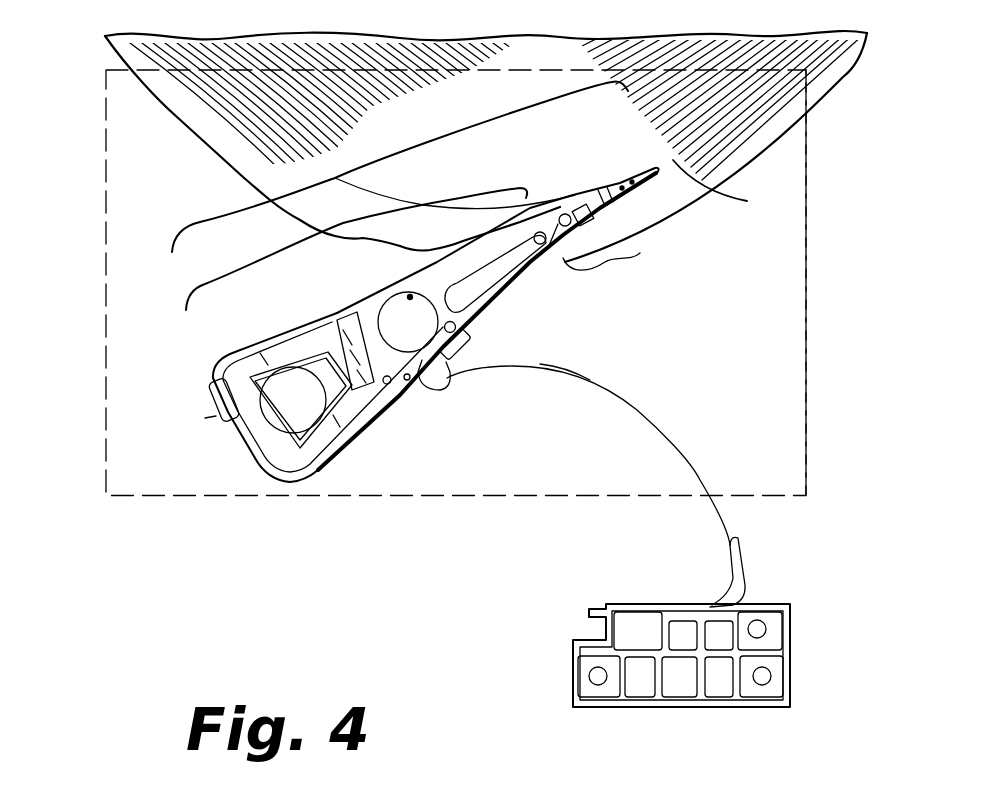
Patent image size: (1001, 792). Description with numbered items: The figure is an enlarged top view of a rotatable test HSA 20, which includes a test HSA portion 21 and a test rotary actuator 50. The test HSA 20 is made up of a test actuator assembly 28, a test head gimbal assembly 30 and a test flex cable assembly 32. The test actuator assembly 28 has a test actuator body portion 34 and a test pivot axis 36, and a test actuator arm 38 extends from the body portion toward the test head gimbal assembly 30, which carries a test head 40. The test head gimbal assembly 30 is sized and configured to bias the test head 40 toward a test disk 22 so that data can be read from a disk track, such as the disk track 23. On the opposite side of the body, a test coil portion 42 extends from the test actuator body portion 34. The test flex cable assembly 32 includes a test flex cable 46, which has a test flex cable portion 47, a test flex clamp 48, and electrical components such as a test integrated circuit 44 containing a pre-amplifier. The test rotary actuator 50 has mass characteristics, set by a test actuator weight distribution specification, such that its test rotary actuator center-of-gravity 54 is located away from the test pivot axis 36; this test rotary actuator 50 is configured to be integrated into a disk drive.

The test HSA 20 is at (86, 157).
The test HSA portion 21 is at (806, 395).
The test disk 22 is at (843, 77).
The disk track 23 is at (745, 201).
The test actuator assembly 28 is at (372, 222).
The test head gimbal assembly 30 is at (622, 268).
The test flex cable assembly 32 is at (655, 444).
The test actuator body portion 34 is at (393, 288).
The test pivot axis 36 is at (410, 328).
The test actuator arm 38 is at (493, 243).
The test head 40 is at (654, 168).
The test coil portion 42 is at (248, 343).
The test integrated circuit 44 is at (467, 345).
The test flex cable 46 is at (713, 514).
The test flex cable portion 47 is at (607, 382).
The test flex clamp 48 is at (573, 677).
The test rotary actuator 50 is at (389, 162).
The test rotary actuator center-of-gravity 54 is at (410, 296).